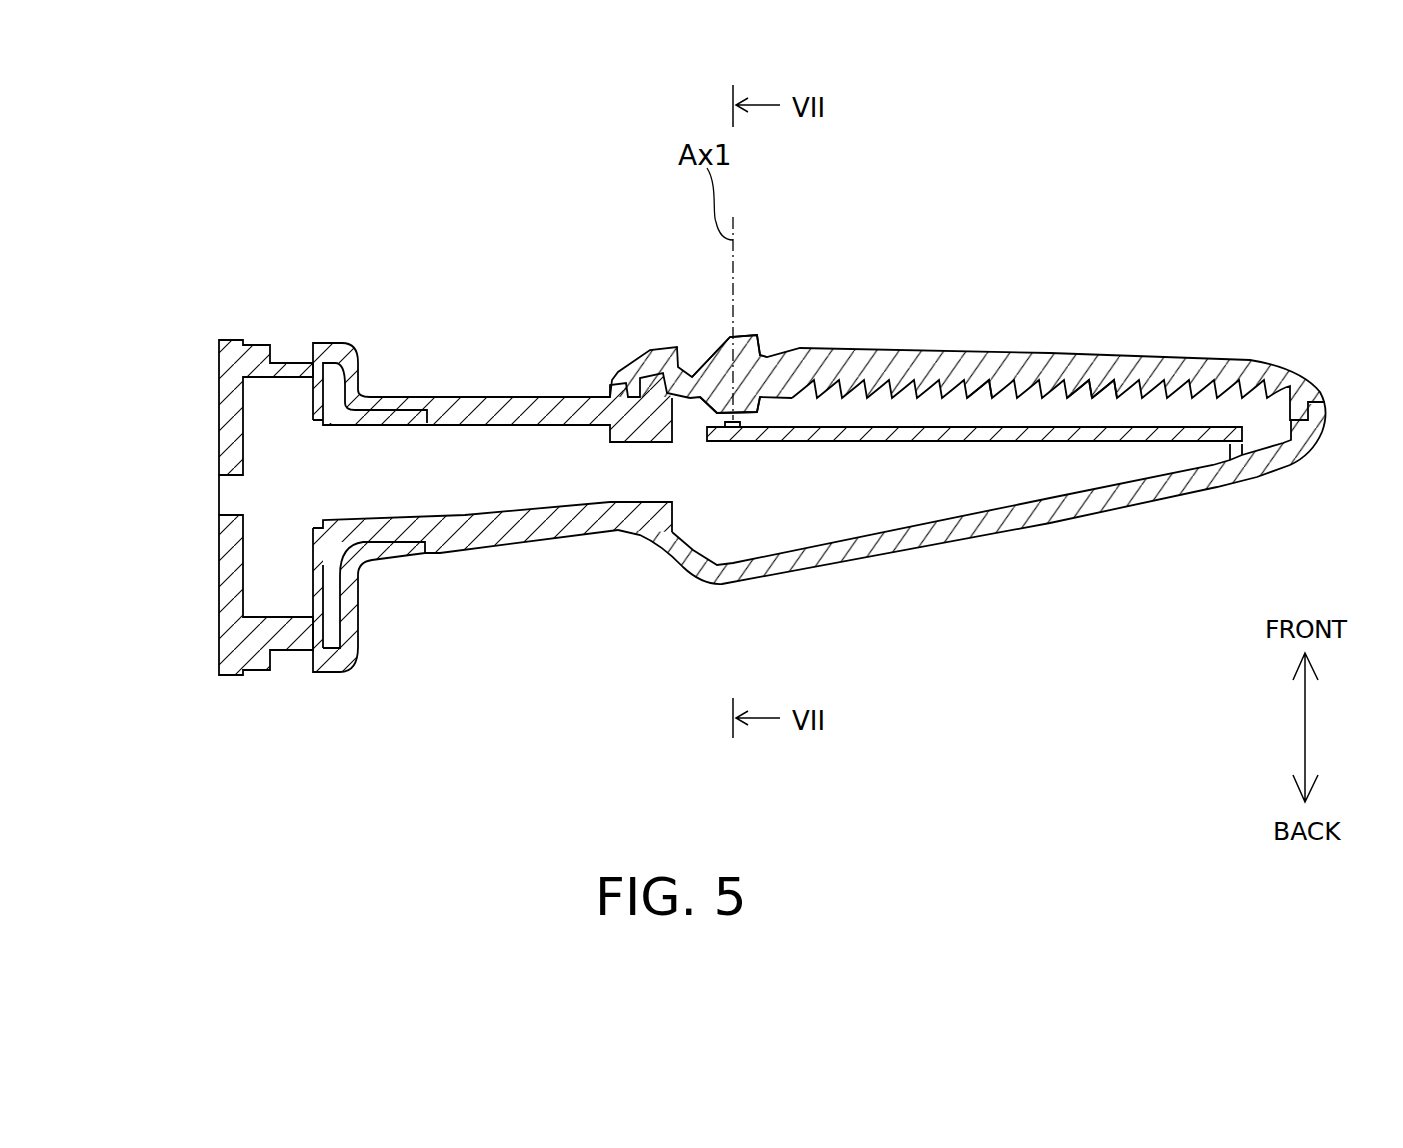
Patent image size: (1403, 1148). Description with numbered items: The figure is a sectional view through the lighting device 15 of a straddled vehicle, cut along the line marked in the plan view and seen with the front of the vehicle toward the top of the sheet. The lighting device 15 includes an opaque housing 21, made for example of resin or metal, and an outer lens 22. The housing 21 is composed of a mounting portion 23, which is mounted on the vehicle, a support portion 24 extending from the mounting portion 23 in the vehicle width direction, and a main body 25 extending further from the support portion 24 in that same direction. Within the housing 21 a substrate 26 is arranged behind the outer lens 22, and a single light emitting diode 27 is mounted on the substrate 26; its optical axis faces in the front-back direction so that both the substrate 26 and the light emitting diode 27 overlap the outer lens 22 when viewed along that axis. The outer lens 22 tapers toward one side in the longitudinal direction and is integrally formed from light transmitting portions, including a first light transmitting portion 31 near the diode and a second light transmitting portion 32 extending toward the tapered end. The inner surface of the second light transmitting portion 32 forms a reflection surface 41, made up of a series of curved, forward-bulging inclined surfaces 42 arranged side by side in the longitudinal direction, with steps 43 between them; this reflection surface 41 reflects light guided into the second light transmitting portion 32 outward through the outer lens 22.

The lighting device 15 is at (1042, 285).
The housing 21 is at (463, 360).
The outer lens 22 is at (862, 303).
The mounting portion 23 is at (285, 362).
The support portion 24 is at (482, 538).
The main body 25 is at (880, 562).
The substrate 26 is at (947, 435).
The light emitting diode 27 is at (732, 430).
The first light transmitting portion 31 is at (754, 324).
The second light transmitting portion 32 is at (936, 324).
The reflection surface 41 is at (975, 377).
The inclined surface 42 is at (1078, 380).
The step 43 is at (1103, 398).